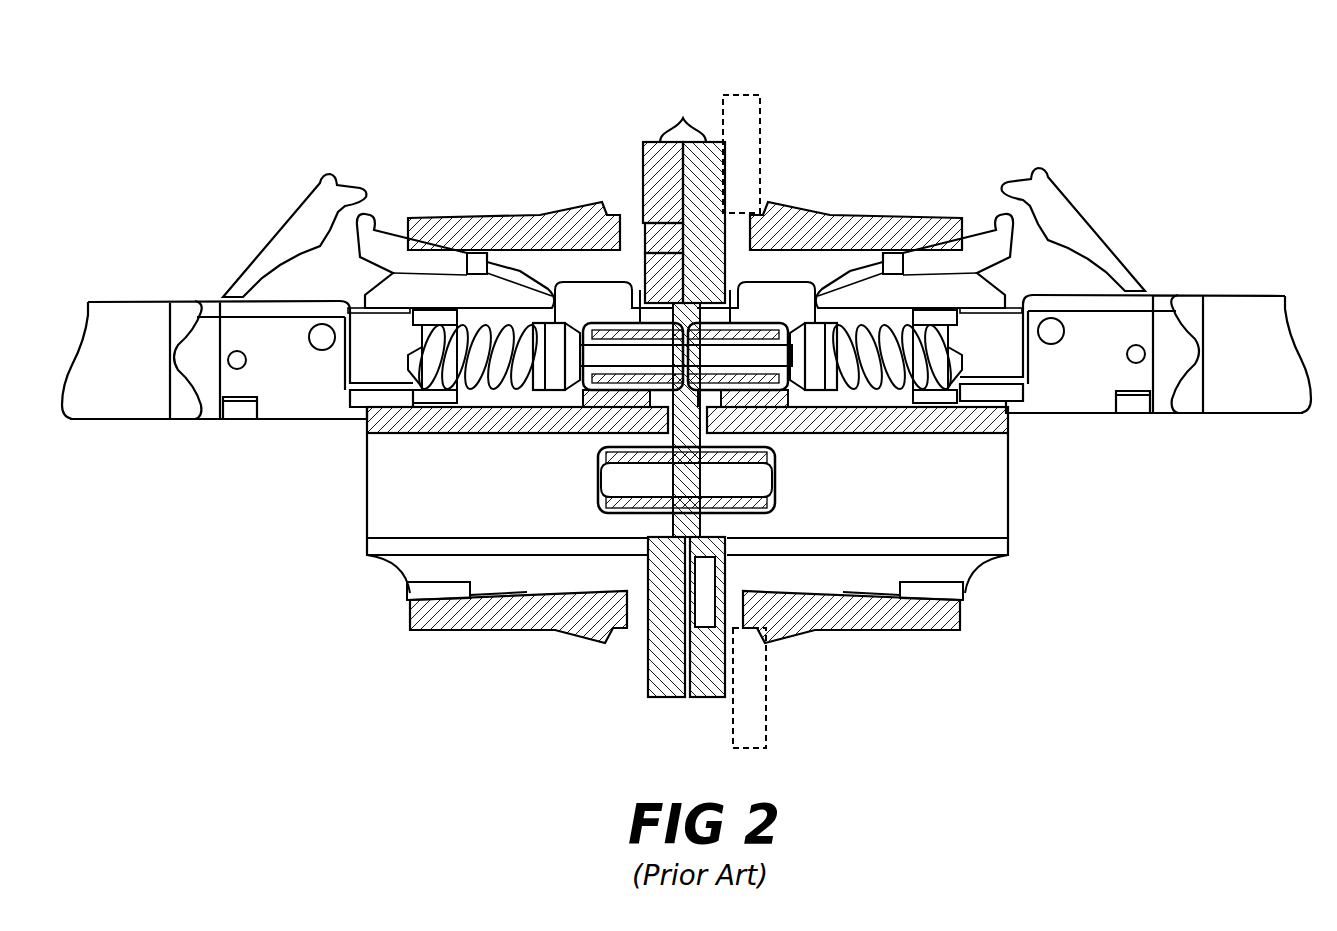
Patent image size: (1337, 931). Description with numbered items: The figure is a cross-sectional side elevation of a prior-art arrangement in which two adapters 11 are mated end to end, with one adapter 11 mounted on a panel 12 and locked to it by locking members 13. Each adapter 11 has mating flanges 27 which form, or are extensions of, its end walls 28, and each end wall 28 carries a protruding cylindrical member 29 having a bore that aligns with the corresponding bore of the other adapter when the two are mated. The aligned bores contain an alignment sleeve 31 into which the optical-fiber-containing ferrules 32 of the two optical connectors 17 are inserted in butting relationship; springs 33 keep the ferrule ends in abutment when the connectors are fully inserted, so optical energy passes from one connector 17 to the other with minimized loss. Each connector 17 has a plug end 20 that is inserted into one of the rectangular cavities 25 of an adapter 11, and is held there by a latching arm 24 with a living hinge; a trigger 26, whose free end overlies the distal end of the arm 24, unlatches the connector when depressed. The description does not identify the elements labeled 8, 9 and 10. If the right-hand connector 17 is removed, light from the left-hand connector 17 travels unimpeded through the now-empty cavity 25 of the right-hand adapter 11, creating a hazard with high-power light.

The flywheel 8 is at (423, 595).
The cover flange 9 is at (457, 242).
The friction lining 10 is at (468, 592).
The adapter 11 is at (482, 616).
The panel 12 is at (763, 105).
The locking members 13 is at (777, 207).
The optical connector 17 is at (120, 420).
The plug end 20 is at (637, 320).
The latching tab or arm 24 is at (393, 222).
The rectangular cavities 25 is at (385, 512).
The trigger 26 is at (292, 212).
The mating flanges 27 is at (684, 301).
The end walls 28 is at (670, 587).
The protruding cylindrical member 29 is at (602, 508).
The alignment sleeve 31 is at (627, 478).
The ferrules 32 is at (623, 353).
The springs 33 is at (488, 390).